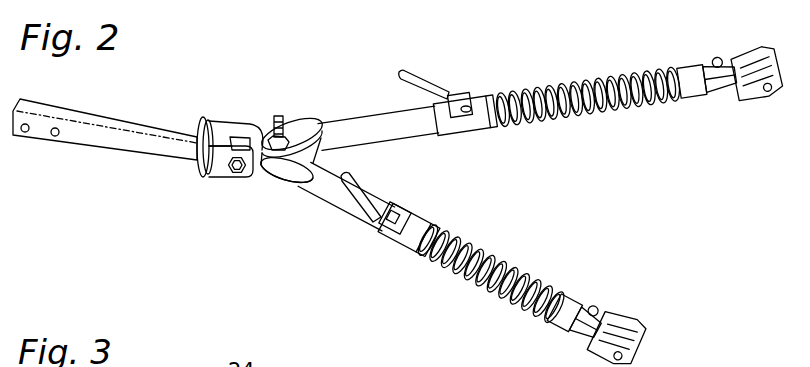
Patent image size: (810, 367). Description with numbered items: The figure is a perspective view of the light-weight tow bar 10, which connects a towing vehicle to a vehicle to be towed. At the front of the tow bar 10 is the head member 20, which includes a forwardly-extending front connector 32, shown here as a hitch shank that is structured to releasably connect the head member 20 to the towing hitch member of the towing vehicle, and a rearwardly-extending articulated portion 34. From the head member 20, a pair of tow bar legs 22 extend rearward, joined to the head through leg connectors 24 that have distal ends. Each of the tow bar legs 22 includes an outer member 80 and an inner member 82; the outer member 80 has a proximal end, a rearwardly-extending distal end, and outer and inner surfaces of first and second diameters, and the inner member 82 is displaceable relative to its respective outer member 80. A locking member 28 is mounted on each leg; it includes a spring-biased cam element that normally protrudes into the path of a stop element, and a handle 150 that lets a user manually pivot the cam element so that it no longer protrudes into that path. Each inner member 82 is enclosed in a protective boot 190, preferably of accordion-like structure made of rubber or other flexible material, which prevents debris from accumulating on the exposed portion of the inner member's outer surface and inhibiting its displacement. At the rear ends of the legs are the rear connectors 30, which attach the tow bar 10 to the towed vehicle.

The tow bar 10 is at (398, 185).
The head member 20 is at (299, 139).
The tow bar legs 22 is at (535, 190).
The leg connectors 24 is at (320, 132).
The locking members 28 is at (481, 100).
The rear connectors 30 is at (760, 55).
The front connector 32 is at (97, 113).
The articulated portion 34 is at (213, 209).
The outer member 80 is at (376, 202).
The inner member 82 is at (556, 196).
The handle 150 is at (416, 74).
The boot 190 is at (648, 105).